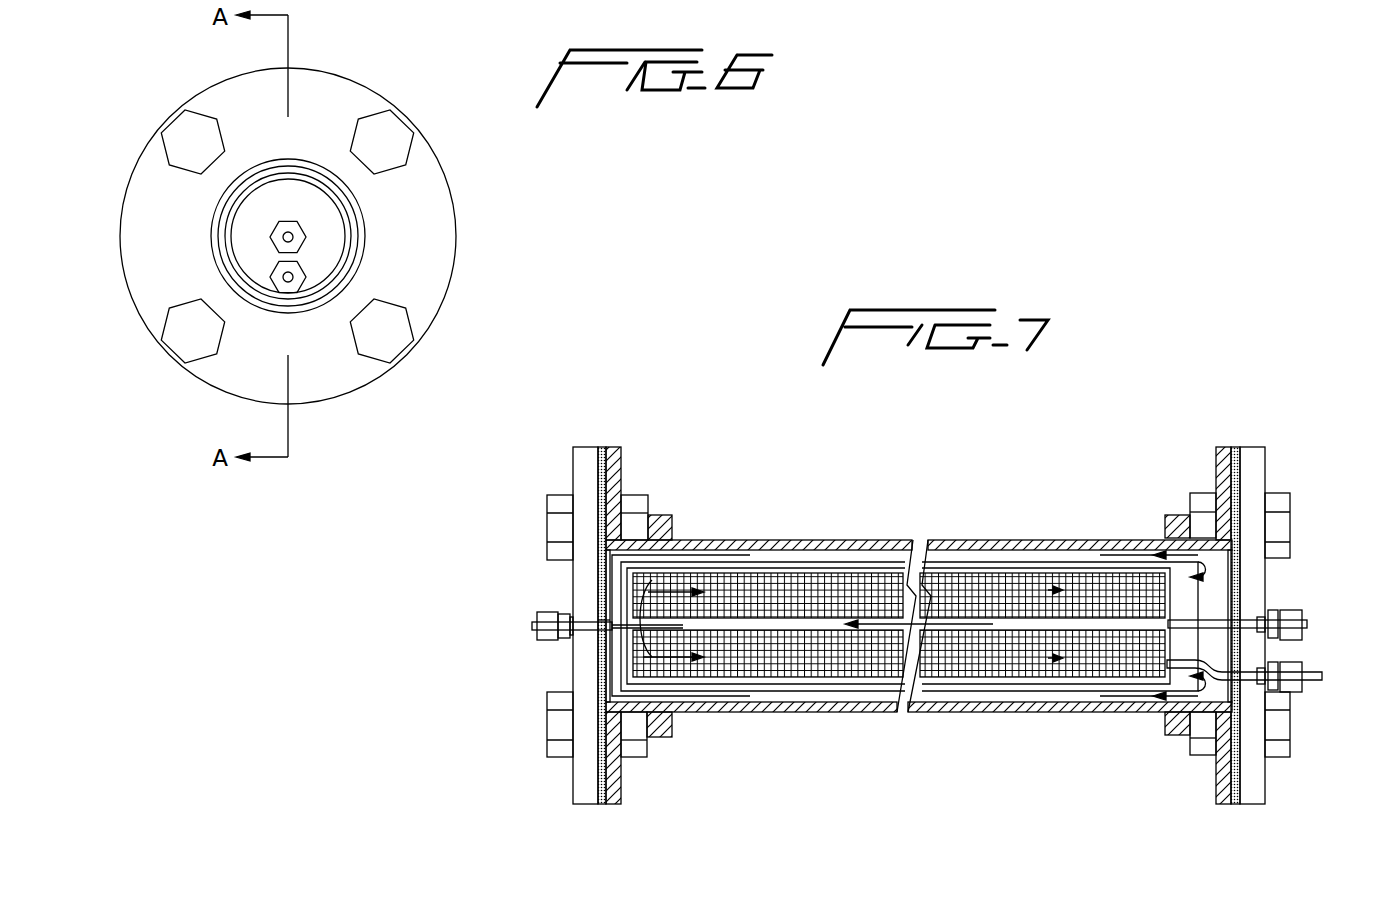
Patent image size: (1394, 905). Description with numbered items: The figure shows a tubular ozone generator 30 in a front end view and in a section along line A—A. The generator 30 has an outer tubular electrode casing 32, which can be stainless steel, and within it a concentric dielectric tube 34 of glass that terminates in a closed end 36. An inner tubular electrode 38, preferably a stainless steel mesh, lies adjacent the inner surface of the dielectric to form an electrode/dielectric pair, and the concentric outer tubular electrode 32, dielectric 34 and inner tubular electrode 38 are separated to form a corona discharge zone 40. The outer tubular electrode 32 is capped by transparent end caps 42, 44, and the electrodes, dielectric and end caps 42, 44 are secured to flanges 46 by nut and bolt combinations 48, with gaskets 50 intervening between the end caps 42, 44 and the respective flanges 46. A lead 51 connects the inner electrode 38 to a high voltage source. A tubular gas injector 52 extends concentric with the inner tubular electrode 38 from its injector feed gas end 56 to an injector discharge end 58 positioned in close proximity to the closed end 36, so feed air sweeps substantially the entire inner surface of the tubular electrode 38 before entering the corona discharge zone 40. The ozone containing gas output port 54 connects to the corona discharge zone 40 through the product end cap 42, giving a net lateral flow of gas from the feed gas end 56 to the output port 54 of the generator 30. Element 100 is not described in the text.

In FIG. 6, the ozone generator 30 is at (462, 204).
In FIG. 7, the ozone generator 30 is at (788, 502).
In FIG. 6, the outer tubular electrode casing 32 is at (120, 242).
In FIG. 7, the outer tubular electrode casing 32 is at (840, 545).
In FIG. 6, the dielectric tube 34 is at (228, 208).
In FIG. 7, the dielectric tube 34 is at (1192, 577).
In FIG. 7, the closed end 36 is at (620, 597).
In FIG. 6, the inner tubular electrode 38 is at (267, 183).
In FIG. 7, the inner tubular electrode 38 is at (1088, 585).
In FIG. 6, the corona discharge zone 40 is at (311, 168).
In FIG. 7, the corona discharge zone 40 is at (955, 555).
In FIG. 7, the product end cap 42 is at (1248, 787).
In FIG. 7, the end cap 44 is at (573, 458).
In FIG. 7, the flange 46 is at (622, 462).
In FIG. 6, the nut and bolt combination 48 is at (188, 135).
In FIG. 7, the nut and bolt combination 48 is at (547, 517).
In FIG. 7, the gasket 50 is at (600, 450).
In FIG. 6, the lead 51 is at (293, 273).
In FIG. 7, the lead 51 is at (1310, 686).
In FIG. 7, the tubular gas injector 52 is at (1018, 623).
In FIG. 7, the ozone containing gas output port 54 is at (600, 636).
In FIG. 6, the injector feed gas end 56 is at (298, 232).
In FIG. 7, the injector feed gas end 56 is at (1308, 623).
In FIG. 7, the injector discharge end 58 is at (652, 580).
In FIG. 7, the probe 100 is at (545, 613).